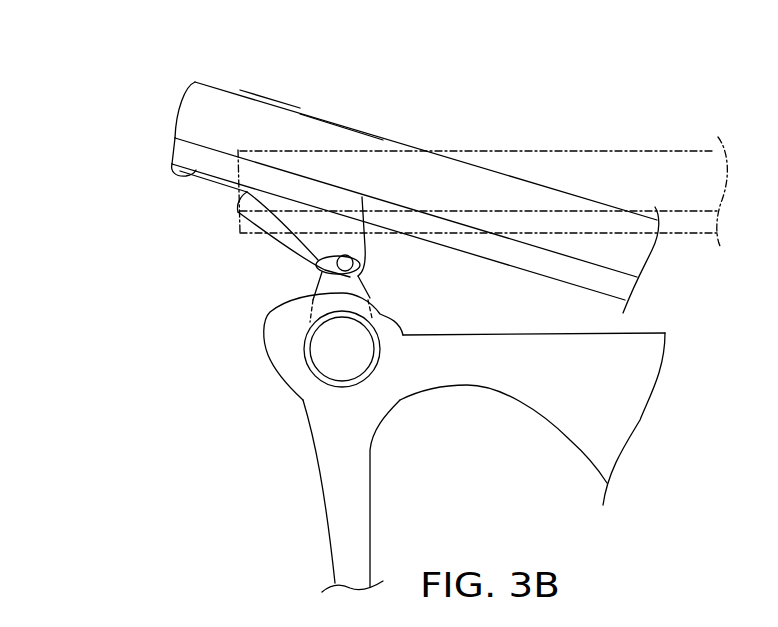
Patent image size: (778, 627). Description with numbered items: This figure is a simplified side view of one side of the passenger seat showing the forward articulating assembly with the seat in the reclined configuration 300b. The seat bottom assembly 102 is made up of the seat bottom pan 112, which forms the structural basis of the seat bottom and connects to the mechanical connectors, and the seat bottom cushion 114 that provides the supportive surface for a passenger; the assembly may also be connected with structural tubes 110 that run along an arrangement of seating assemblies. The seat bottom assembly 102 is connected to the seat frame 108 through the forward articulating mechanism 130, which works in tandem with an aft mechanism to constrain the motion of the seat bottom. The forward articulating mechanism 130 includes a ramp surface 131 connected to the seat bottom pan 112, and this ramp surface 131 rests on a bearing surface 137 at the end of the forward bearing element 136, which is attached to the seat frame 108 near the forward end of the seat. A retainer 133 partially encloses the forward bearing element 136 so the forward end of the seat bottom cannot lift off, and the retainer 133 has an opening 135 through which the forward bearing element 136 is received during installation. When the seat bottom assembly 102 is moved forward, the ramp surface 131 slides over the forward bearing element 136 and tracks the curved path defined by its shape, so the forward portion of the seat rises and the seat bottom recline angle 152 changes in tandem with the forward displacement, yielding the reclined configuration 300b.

The reclined configuration 300b is at (103, 106).
The seat bottom assembly 102 is at (328, 113).
The seat frame 108 is at (472, 404).
The structural tubes 110 is at (318, 372).
The seat bottom pan 112 is at (366, 196).
The seat bottom cushion 114 is at (490, 172).
The forward articulating mechanism 130 is at (365, 263).
The ramp surface 131 is at (305, 254).
The retainer 133 is at (238, 226).
The opening 135 is at (200, 176).
The forward bearing element 136 is at (316, 284).
The bearing surface 137 is at (298, 262).
The seat bottom recline angle 152 is at (258, 150).